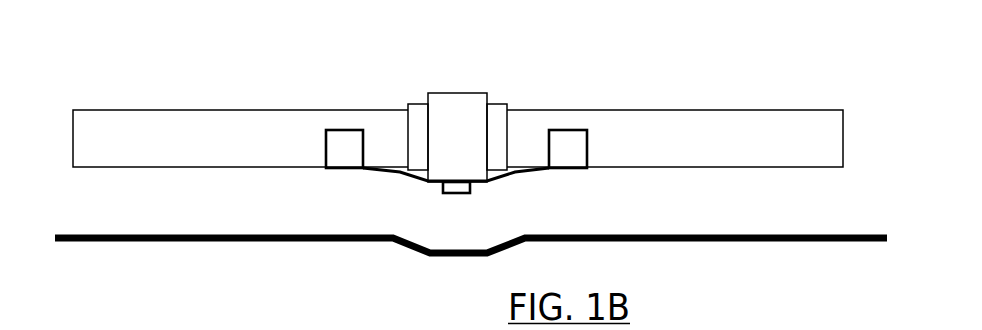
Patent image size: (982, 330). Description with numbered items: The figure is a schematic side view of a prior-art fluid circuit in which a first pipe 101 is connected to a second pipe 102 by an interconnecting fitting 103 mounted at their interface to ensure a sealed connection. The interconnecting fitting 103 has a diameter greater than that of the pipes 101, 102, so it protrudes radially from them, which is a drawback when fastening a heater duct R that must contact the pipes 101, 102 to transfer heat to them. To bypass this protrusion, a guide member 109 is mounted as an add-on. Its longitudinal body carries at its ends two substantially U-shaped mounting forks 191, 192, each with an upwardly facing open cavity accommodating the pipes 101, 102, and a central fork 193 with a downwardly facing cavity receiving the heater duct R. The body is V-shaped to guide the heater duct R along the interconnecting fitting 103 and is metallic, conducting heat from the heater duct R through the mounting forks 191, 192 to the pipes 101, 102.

The first pipe 101 is at (117, 110).
The second pipe 102 is at (794, 110).
The interconnecting fitting 103 is at (455, 93).
The mounting fork 191 is at (350, 138).
The mounting fork 192 is at (567, 138).
The central fork 193 is at (457, 194).
The guide member 109 is at (504, 186).
The heater duct R is at (205, 243).